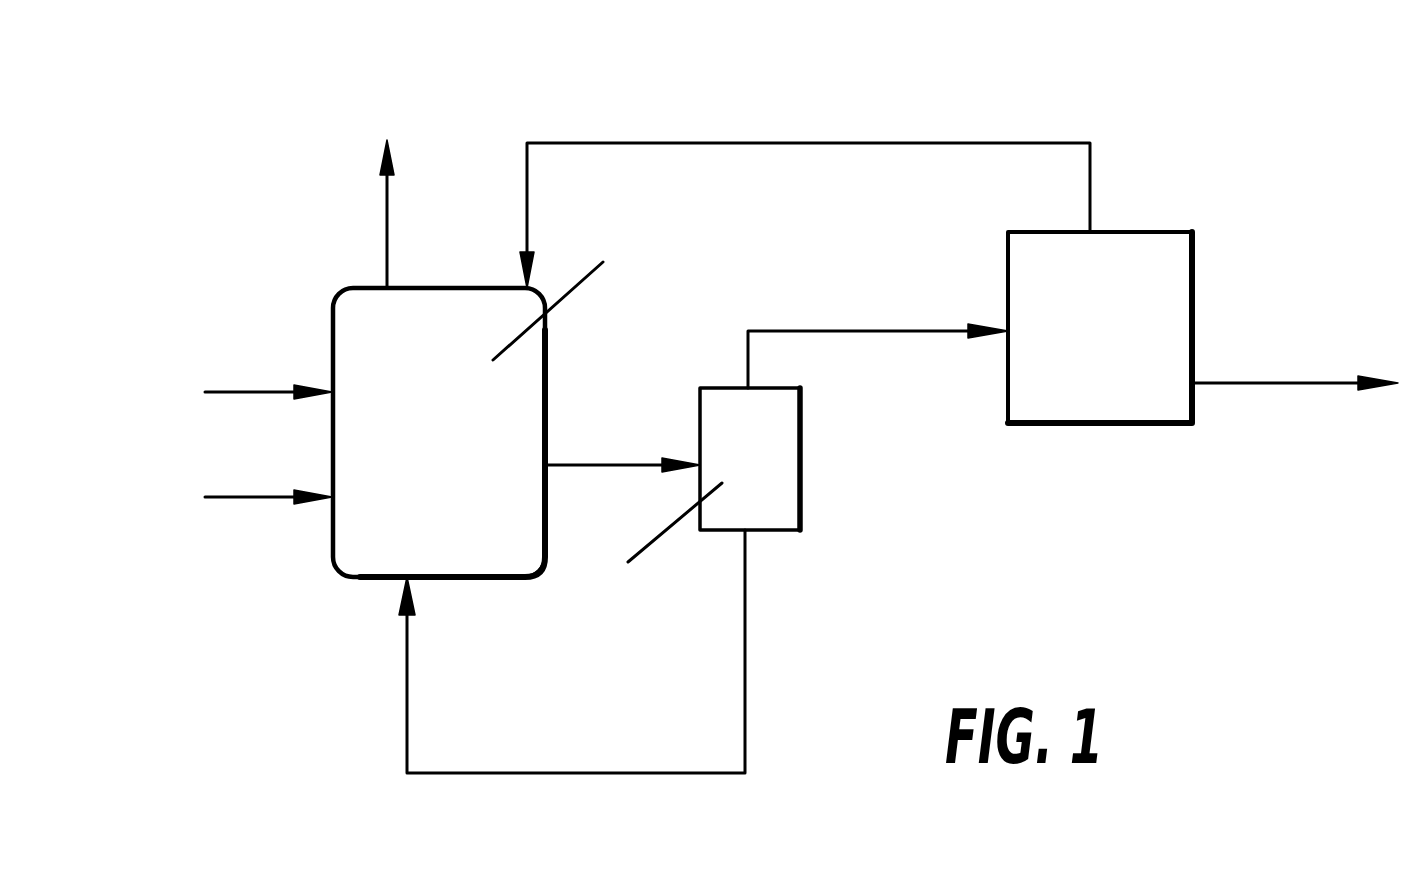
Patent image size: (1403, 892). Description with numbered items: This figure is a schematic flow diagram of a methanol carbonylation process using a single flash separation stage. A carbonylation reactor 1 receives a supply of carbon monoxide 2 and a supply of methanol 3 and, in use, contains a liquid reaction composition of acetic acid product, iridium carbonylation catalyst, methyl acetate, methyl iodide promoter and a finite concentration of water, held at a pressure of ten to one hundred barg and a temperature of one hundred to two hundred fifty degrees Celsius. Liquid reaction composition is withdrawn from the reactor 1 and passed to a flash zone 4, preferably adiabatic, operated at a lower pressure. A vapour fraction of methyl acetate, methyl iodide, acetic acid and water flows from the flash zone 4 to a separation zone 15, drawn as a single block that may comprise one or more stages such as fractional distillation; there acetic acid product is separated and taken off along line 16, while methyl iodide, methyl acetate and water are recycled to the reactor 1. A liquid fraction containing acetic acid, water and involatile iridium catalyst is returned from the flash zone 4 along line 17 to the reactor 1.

The carbonylation reactor 1 is at (372, 547).
The supply of carbon monoxide 2 is at (247, 393).
The supply of methanol 3 is at (243, 497).
The flash zone 4 is at (803, 468).
The separation zone 15 is at (1093, 423).
The line 16 is at (1310, 386).
The line 17 is at (480, 772).